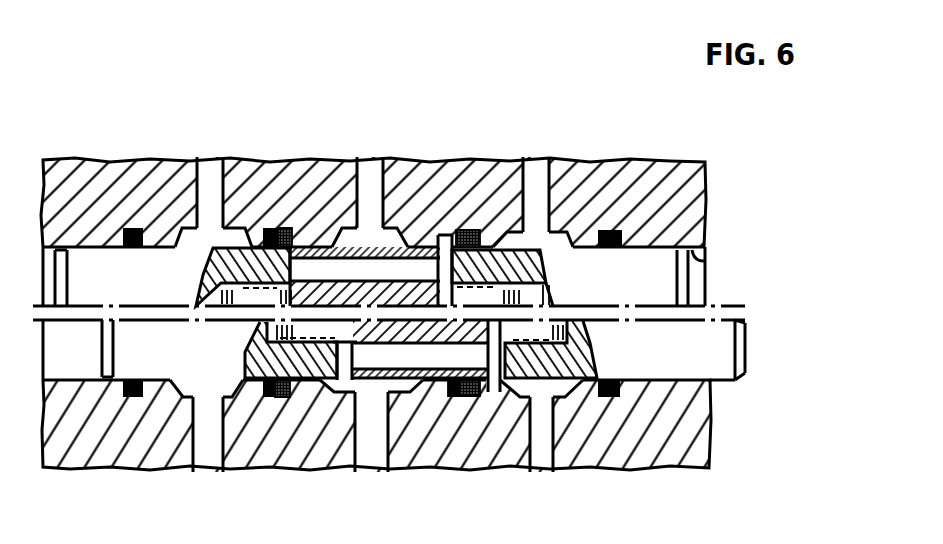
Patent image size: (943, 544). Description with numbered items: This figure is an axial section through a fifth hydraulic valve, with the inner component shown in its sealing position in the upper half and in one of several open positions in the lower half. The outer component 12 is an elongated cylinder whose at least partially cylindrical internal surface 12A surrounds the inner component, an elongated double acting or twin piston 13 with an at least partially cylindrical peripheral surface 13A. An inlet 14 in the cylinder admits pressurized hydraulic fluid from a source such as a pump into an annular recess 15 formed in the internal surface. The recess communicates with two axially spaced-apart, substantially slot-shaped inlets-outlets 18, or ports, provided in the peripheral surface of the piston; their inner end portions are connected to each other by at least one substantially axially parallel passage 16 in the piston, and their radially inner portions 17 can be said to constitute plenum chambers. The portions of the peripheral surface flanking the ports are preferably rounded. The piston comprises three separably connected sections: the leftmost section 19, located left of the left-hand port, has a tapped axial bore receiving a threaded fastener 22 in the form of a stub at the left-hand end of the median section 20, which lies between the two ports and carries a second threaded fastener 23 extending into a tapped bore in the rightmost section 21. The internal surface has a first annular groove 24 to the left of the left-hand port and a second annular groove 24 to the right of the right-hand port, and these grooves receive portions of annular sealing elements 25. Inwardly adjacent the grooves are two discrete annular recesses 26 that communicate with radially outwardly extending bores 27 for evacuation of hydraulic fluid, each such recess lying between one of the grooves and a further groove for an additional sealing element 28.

The outer component 12 is at (493, 192).
The internal surface 12A is at (708, 257).
The inner component 13 is at (770, 318).
The peripheral surface 13A is at (667, 383).
The inlet 14 is at (369, 190).
The annular recess 15 is at (410, 228).
The passage 16 is at (355, 273).
The radially inner portions 17 is at (318, 387).
The inlets-outlets 18 is at (313, 255).
The leftmost section 19 is at (88, 290).
The median section 20 is at (463, 395).
The rightmost section 21 is at (628, 288).
The threaded fastener 22 is at (247, 331).
The second threaded fastener 23 is at (494, 295).
The annular groove 24 is at (293, 245).
The annular sealing element 25 is at (270, 230).
The annular recess 26 is at (185, 230).
The bore 27 is at (210, 177).
The additional sealing element 28 is at (127, 228).